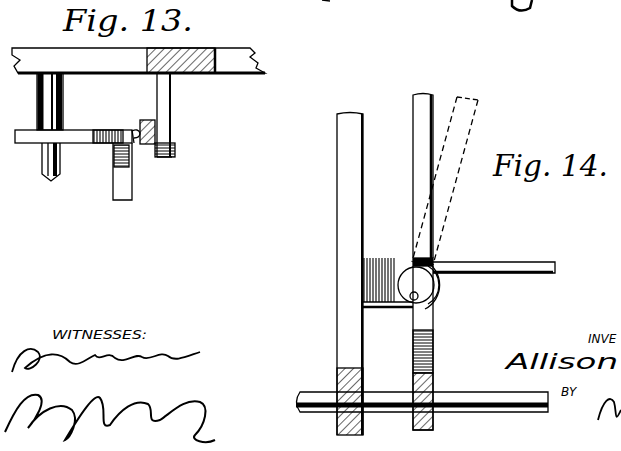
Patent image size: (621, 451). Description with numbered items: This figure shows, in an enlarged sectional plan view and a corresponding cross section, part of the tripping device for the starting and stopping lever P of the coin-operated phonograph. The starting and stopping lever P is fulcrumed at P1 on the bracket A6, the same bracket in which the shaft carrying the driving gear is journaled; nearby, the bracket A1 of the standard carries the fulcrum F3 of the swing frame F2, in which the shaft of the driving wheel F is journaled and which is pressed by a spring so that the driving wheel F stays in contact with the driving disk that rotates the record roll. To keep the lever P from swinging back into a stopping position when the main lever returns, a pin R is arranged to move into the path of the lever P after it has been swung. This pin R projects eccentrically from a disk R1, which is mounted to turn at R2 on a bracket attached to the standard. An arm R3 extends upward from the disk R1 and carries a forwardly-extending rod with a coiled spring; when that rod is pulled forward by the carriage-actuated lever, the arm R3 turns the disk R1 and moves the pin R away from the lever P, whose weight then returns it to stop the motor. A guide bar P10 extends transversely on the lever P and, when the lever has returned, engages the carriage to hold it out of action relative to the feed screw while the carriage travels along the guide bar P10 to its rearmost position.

In FIG. 13, the bracket A1 is at (215, 48).
In FIG. 14, the bracket A1 is at (337, 432).
In FIG. 13, the bracket A6 is at (255, 57).
In FIG. 14, the bracket A6 is at (347, 303).
In FIG. 13, the starting and stopping lever P is at (22, 143).
In FIG. 14, the starting and stopping lever P is at (433, 368).
In FIG. 13, the fulcrum of starting and stopping lever P1 is at (62, 160).
In FIG. 14, the fulcrum of starting and stopping lever P1 is at (446, 412).
In FIG. 13, the guide bar P10 is at (121, 205).
In FIG. 14, the guide bar P10 is at (514, 280).
In FIG. 13, the pin R is at (135, 132).
In FIG. 14, the pin R is at (412, 314).
In FIG. 13, the disk R1 is at (146, 120).
In FIG. 14, the disk R1 is at (444, 296).
In FIG. 13, the pivot of disk R2 is at (175, 145).
In FIG. 14, the pivot of disk R2 is at (415, 283).
In FIG. 13, the arm R3 is at (160, 133).
In FIG. 14, the arm R3 is at (490, 121).
In FIG. 13, the driving wheel F is at (324, 9).
In FIG. 13, the swing frame F2 is at (455, 0).
In FIG. 13, the fulcrum of swing frame F3 is at (527, 8).